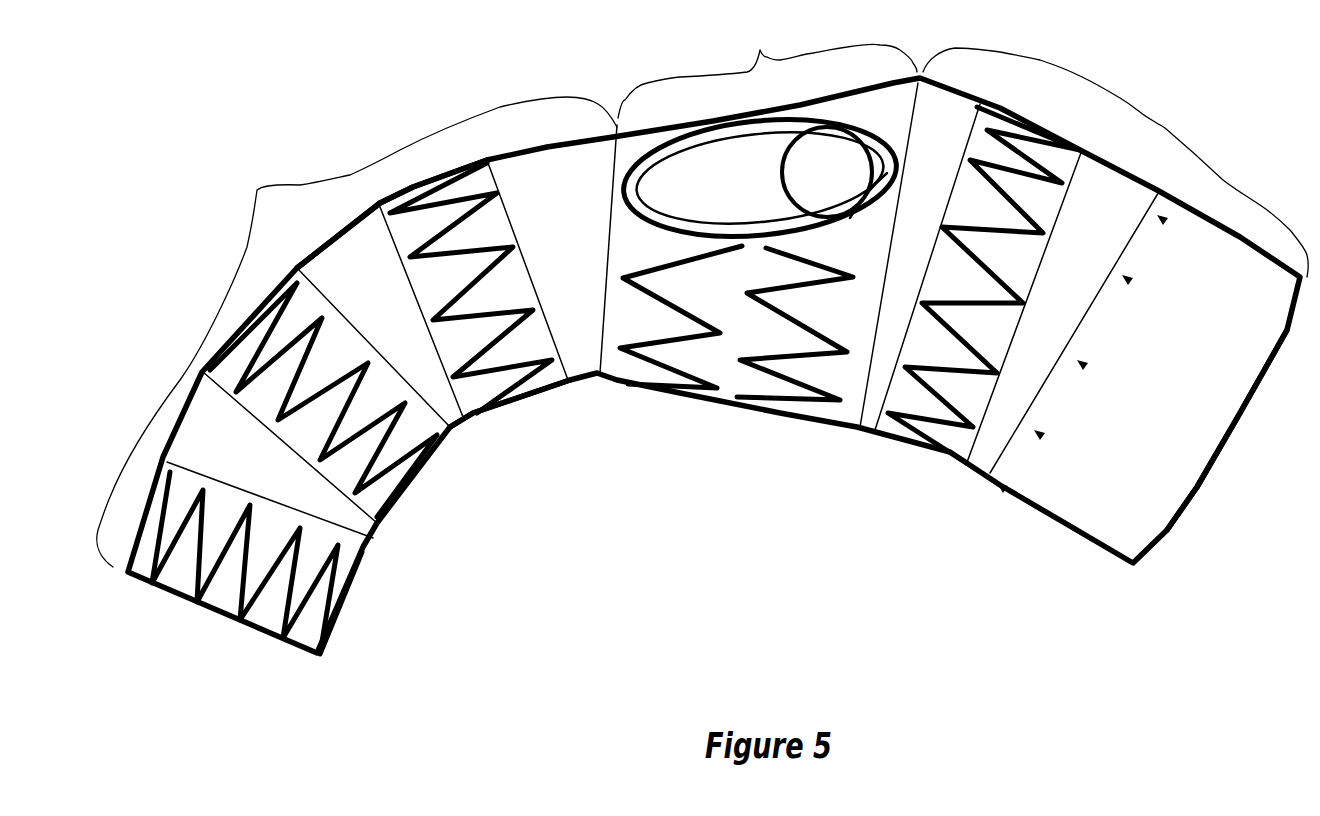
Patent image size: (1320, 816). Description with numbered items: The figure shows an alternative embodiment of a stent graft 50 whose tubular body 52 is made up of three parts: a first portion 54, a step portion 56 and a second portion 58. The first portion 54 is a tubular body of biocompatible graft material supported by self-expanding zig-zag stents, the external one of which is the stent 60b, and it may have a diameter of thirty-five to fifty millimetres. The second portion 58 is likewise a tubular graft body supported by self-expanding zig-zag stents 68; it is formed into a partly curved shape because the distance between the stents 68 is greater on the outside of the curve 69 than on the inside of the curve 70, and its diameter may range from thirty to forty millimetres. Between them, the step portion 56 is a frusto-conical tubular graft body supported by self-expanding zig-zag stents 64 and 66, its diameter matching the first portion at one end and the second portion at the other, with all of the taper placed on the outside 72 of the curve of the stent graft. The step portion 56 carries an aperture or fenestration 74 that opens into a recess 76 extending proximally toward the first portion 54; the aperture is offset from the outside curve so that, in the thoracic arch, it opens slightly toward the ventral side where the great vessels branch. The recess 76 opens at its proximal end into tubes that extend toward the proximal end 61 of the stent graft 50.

The stent graft 50 is at (507, 610).
The tubular body 52 is at (668, 396).
The first portion 54 is at (1140, 112).
The step portion 56 is at (760, 50).
The second portion 58 is at (257, 190).
The stent 60b is at (927, 430).
The proximal end 61 is at (1194, 490).
The self expanding zig-zag stent 64 is at (792, 387).
The self expanding zig-zag stent 66 is at (703, 382).
The self expanding zig-zag stents 68 is at (511, 372).
The outside of the curve 69 is at (353, 230).
The inside of the curve 70 is at (455, 427).
The outside of the curve 72 is at (656, 128).
The aperture or fenestration 74 is at (779, 128).
The recess 76 is at (714, 178).